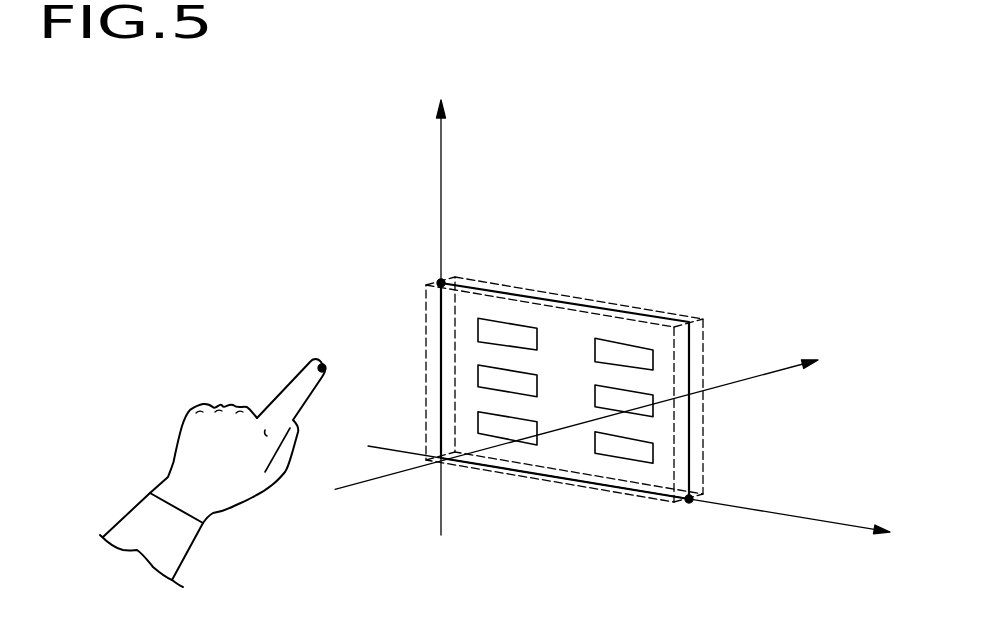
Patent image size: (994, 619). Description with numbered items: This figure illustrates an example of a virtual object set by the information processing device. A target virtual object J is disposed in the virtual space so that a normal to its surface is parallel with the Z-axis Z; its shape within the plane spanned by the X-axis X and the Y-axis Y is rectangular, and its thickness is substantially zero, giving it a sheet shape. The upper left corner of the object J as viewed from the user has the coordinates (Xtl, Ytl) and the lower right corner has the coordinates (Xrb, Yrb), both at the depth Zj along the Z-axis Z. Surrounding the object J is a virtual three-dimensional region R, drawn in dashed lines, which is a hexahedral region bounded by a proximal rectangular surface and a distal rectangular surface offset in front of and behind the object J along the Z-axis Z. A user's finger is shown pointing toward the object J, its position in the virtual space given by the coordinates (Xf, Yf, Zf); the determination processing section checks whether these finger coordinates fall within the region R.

The target virtual object J is at (568, 292).
The virtual three-dimensional region R is at (650, 306).
The X-axis X is at (641, 500).
The Y-axis Y is at (441, 295).
The Z-axis Z is at (591, 414).